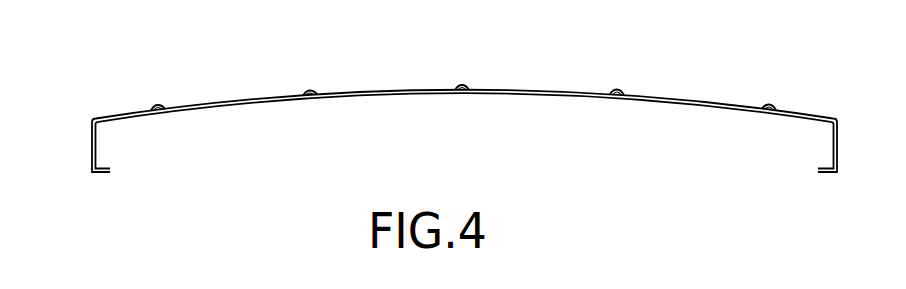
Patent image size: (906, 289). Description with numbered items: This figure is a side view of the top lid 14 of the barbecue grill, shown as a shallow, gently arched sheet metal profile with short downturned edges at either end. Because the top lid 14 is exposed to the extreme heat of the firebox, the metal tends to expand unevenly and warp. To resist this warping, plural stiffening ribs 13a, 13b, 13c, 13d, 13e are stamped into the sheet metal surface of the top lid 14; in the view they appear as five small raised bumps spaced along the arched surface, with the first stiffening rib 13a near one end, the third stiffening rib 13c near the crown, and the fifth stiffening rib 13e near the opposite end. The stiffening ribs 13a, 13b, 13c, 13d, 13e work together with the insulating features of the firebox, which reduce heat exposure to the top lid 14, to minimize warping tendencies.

The top lid 14 is at (108, 115).
The stiffening rib 13a is at (160, 106).
The stiffening rib 13b is at (315, 91).
The stiffening rib 13c is at (466, 87).
The stiffening rib 13d is at (619, 91).
The stiffening rib 13e is at (772, 106).